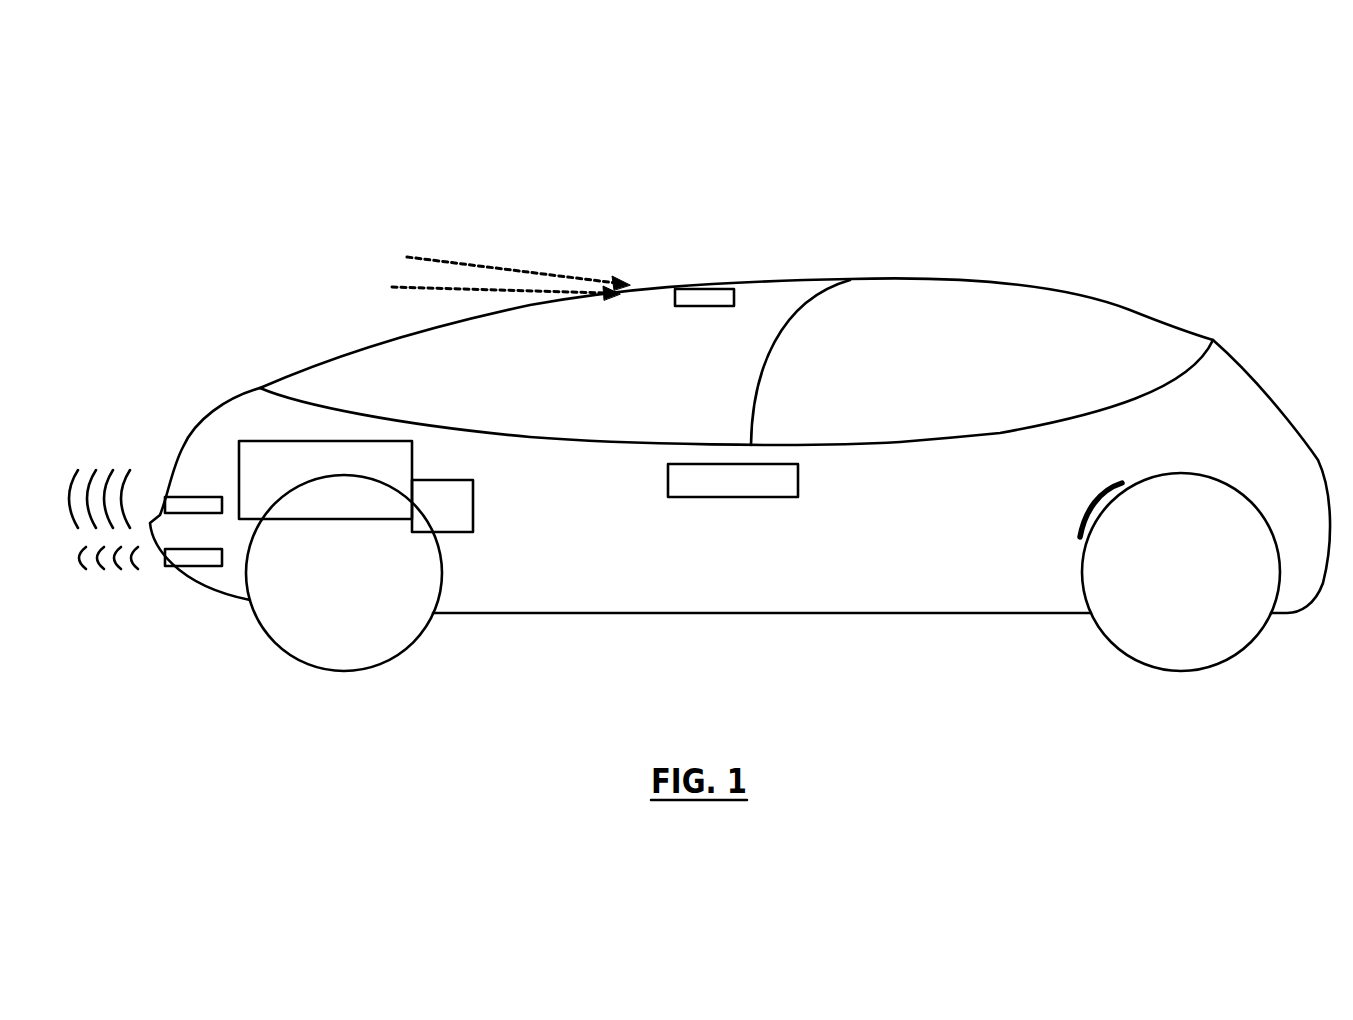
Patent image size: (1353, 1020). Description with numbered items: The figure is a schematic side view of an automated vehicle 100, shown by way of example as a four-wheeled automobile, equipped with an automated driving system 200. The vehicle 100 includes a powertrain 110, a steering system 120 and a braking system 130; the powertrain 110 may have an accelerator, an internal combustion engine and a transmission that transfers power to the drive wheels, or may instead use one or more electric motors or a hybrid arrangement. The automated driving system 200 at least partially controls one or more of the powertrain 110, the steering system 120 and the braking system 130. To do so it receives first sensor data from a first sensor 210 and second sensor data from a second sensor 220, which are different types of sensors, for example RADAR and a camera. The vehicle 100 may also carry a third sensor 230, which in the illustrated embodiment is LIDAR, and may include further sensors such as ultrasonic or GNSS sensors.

The automated vehicle 100 is at (1047, 182).
The powertrain 110 is at (250, 453).
The steering system 120 is at (448, 517).
The braking system 130 is at (1076, 531).
The automated driving system 200 is at (745, 483).
The first sensor 210 is at (195, 502).
The second sensor 220 is at (710, 296).
The third sensor 230 is at (198, 557).